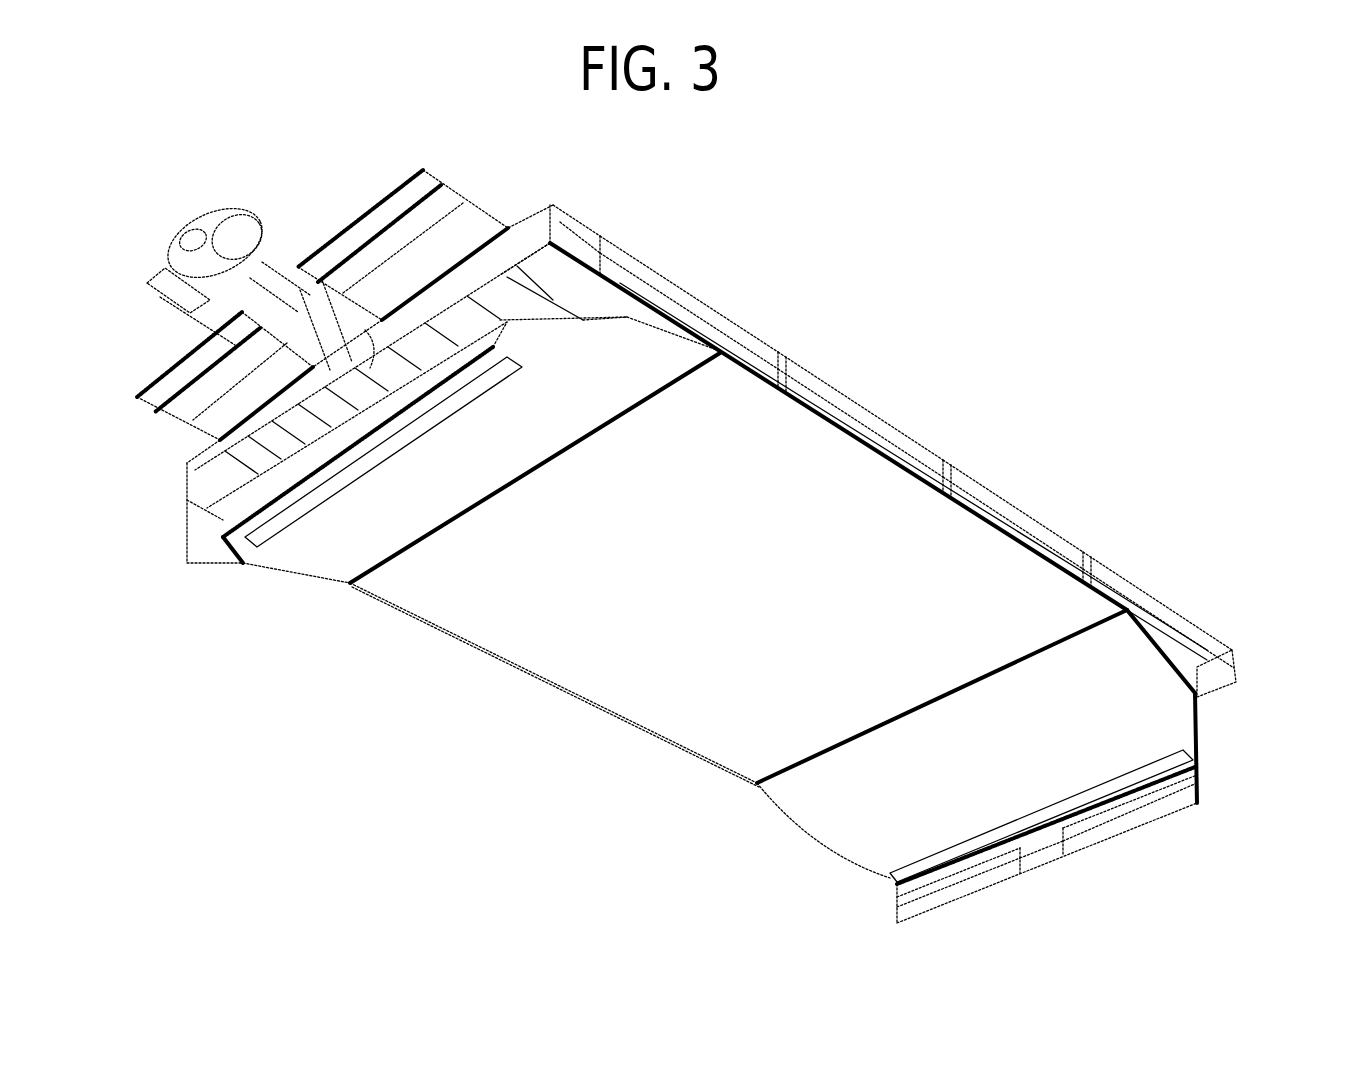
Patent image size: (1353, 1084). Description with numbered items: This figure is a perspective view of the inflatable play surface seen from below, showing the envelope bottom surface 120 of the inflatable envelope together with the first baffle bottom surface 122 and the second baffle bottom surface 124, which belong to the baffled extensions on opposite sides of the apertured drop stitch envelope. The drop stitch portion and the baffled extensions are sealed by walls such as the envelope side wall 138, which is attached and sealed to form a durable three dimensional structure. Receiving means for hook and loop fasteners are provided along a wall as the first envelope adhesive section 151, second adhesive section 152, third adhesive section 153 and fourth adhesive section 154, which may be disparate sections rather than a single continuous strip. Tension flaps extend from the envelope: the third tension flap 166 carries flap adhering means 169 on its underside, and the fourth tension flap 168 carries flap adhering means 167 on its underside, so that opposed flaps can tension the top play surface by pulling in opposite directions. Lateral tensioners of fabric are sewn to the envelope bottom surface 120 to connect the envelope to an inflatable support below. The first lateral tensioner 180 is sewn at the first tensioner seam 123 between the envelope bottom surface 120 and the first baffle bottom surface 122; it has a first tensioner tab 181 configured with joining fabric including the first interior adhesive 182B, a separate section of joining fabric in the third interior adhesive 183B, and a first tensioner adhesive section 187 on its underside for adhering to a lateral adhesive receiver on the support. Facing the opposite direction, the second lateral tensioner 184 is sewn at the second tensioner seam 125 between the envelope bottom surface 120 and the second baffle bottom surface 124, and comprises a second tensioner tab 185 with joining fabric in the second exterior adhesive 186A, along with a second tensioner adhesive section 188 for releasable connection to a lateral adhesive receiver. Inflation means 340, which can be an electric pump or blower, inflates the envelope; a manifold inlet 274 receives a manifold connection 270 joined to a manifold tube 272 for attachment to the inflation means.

The envelope bottom surface 120 is at (533, 640).
The first baffle bottom surface 122 is at (1197, 670).
The first tensioner seam 123 is at (788, 778).
The second baffle bottom surface 124 is at (587, 293).
The second tensioner seam 125 is at (392, 565).
The envelope side wall 138 is at (573, 237).
The first envelope adhesive section 151 is at (717, 317).
The second adhesive section 152 is at (850, 397).
The third adhesive section 153 is at (1007, 507).
The fourth adhesive section 154 is at (1127, 582).
The third tension flap 166 is at (468, 217).
The flap adhering means 167 is at (170, 380).
The fourth tension flap 168 is at (200, 413).
The flap adhering means 169 is at (423, 215).
The first lateral tensioner 180 is at (823, 800).
The first tensioner tab 181 is at (1045, 848).
The first interior adhesive 182B is at (1102, 832).
The third interior adhesive 183B is at (978, 882).
The second lateral tensioner 184 is at (317, 543).
The second tensioner tab 185 is at (495, 340).
The second exterior adhesive 186A is at (223, 520).
The first tensioner adhesive section 187 is at (1163, 767).
The second tensioner adhesive section 188 is at (398, 442).
The manifold connection 270 is at (340, 360).
The manifold tube 272 is at (305, 303).
The manifold inlet 274 is at (368, 340).
The inflation means 340 is at (232, 222).